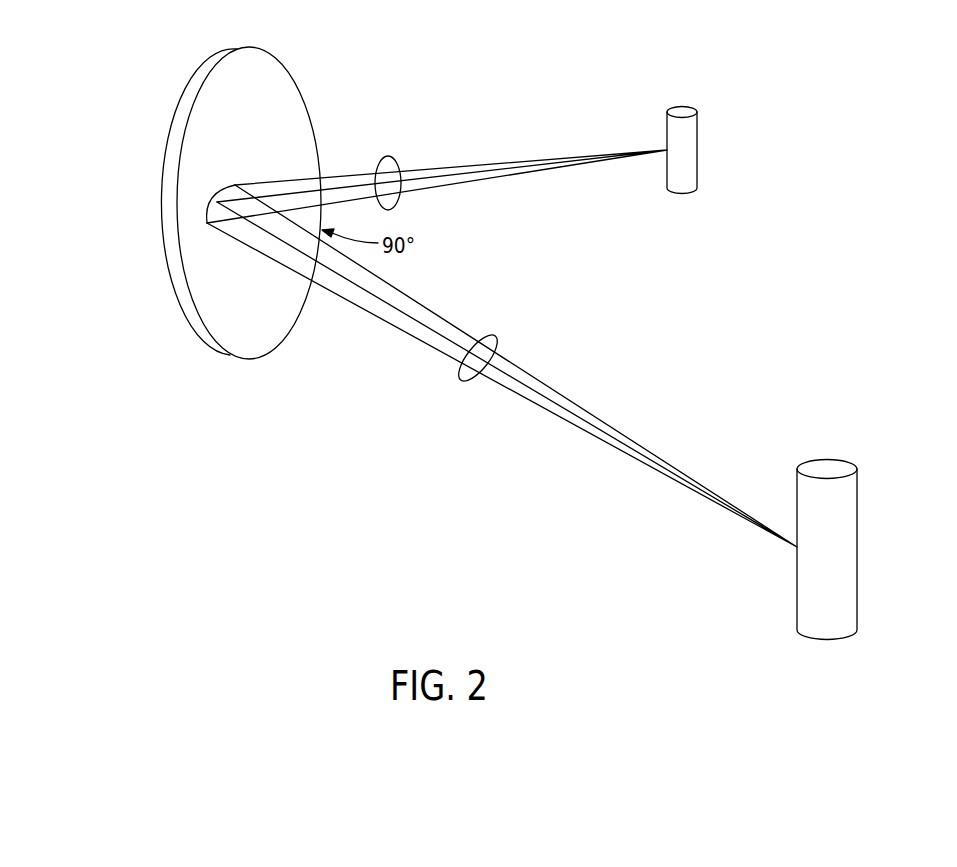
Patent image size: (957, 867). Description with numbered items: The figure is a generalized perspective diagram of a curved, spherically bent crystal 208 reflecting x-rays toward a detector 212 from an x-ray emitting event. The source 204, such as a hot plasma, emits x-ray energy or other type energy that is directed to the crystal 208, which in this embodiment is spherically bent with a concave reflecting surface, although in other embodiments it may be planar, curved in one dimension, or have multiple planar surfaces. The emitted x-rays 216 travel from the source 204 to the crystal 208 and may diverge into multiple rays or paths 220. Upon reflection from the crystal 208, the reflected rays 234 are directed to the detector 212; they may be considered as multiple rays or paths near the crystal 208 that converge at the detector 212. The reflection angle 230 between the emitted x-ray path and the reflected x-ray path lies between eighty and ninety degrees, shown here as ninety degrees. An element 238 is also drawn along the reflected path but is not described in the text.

The source 204 is at (795, 600).
The crystal 208 is at (160, 258).
The detector 212 is at (682, 104).
The emitted x-rays 216 is at (627, 412).
The multiple rays or paths 220 is at (462, 374).
The reflection angle 230 is at (442, 258).
The reflected rays 234 is at (502, 142).
The lens 238 is at (388, 156).